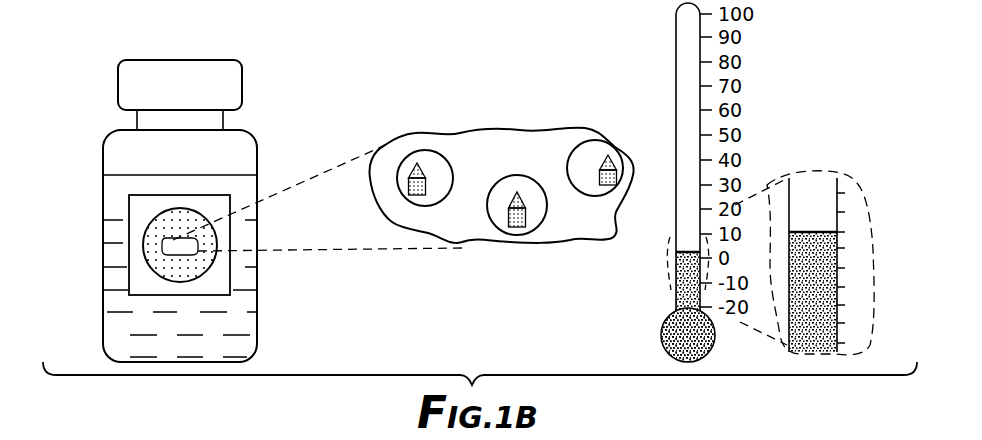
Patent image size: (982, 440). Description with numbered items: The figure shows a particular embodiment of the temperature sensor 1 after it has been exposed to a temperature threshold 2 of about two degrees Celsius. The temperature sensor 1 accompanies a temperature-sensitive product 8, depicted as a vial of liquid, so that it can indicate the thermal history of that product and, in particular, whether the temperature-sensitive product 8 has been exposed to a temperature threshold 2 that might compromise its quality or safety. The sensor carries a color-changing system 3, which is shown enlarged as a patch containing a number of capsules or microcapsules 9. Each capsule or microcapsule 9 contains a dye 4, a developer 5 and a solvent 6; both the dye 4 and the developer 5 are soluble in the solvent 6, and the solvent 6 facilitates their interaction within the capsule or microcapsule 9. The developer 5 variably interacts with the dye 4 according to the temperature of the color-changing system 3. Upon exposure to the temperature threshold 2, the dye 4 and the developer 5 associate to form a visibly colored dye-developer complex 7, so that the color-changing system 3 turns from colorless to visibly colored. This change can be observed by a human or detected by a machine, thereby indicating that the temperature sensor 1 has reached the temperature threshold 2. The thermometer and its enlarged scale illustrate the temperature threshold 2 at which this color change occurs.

The temperature sensor 1 is at (213, 193).
The temperature threshold 2 is at (865, 229).
The color-changing system 3 is at (145, 227).
The dye 4 is at (416, 196).
The developer 5 is at (411, 176).
The solvent 6 is at (470, 232).
The dye-developer complex 7 is at (428, 171).
The temperature-sensitive product 8 is at (100, 323).
The capsule or microcapsule 9 is at (444, 207).